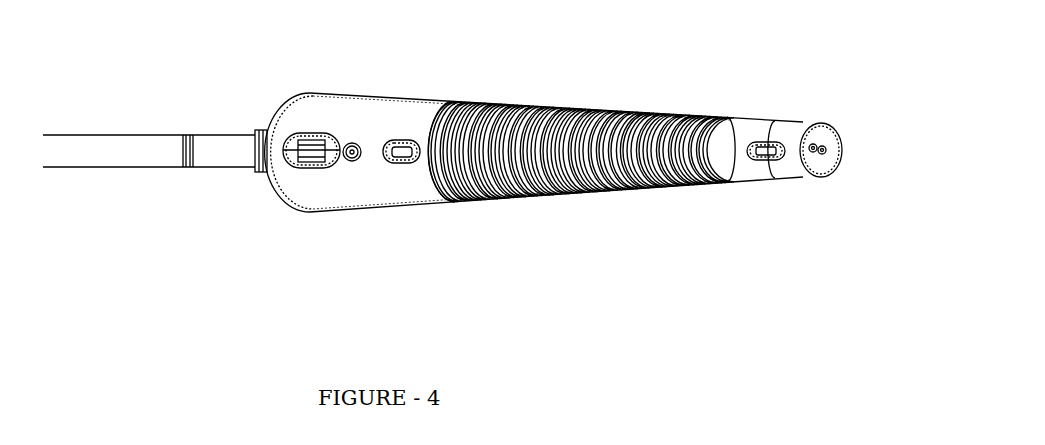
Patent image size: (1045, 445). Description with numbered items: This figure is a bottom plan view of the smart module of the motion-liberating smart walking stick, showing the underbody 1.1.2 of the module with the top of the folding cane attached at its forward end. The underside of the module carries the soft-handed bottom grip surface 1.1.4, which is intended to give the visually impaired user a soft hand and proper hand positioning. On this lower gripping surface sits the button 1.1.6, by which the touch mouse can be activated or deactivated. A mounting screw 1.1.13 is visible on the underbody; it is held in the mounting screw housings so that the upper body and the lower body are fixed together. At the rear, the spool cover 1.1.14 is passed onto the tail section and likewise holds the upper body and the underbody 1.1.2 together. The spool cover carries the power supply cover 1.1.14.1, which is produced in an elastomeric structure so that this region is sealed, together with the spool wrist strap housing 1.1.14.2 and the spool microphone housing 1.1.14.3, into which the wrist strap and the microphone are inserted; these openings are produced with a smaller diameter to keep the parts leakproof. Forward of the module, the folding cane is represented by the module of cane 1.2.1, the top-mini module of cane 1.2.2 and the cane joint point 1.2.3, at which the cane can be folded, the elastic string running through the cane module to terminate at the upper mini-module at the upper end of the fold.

The underbody 1.1.2 is at (380, 115).
The bottom grip surface 1.1.4 is at (653, 120).
The button 1.1.6 is at (393, 162).
The mounting screw 1.1.13 is at (352, 158).
The spool cover 1.1.14 is at (840, 158).
The power supply cover 1.1.14.1 is at (767, 157).
The spool wrist strap housing 1.1.14.2 is at (810, 163).
The spool microphone housing 1.1.14.3 is at (820, 148).
The module of cane 1.2.1 is at (85, 160).
The top-mini module of cane 1.2.2 is at (213, 135).
The cane joint point 1.2.3 is at (188, 167).